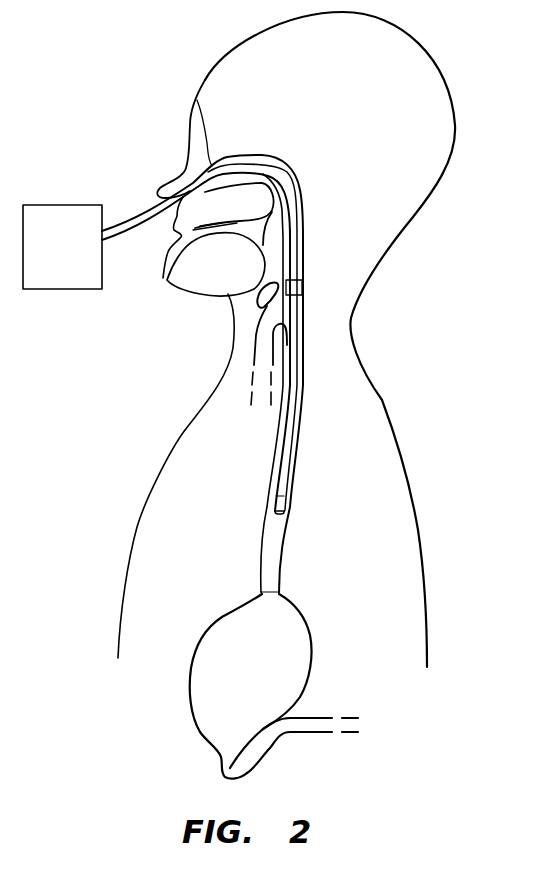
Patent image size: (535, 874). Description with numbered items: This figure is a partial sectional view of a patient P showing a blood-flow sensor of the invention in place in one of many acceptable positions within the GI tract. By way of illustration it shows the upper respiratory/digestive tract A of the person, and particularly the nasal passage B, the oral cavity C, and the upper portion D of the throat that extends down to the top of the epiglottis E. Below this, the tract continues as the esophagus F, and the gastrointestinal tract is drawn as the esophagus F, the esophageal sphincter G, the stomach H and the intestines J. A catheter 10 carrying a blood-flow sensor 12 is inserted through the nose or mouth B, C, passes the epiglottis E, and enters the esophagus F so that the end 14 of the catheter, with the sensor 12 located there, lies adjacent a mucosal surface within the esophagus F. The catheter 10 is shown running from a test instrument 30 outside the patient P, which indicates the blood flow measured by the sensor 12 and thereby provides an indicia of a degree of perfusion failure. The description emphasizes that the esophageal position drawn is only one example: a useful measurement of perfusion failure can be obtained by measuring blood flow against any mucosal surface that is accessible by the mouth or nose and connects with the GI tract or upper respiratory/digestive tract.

The patient P is at (440, 67).
The catheter 10 is at (197, 102).
The nasal passage B is at (193, 197).
The oral cavity C is at (167, 281).
The test instrument 30 is at (78, 205).
The blood-flow sensor 12 is at (288, 497).
The end of the catheter 14 is at (286, 508).
The upper respiratory/digestive tract A is at (314, 237).
The upper portion of the throat D is at (302, 292).
The epiglottis E is at (228, 294).
The esophagus F is at (264, 518).
The esophageal sphincter G is at (256, 588).
The stomach H is at (196, 676).
The intestines J is at (216, 766).